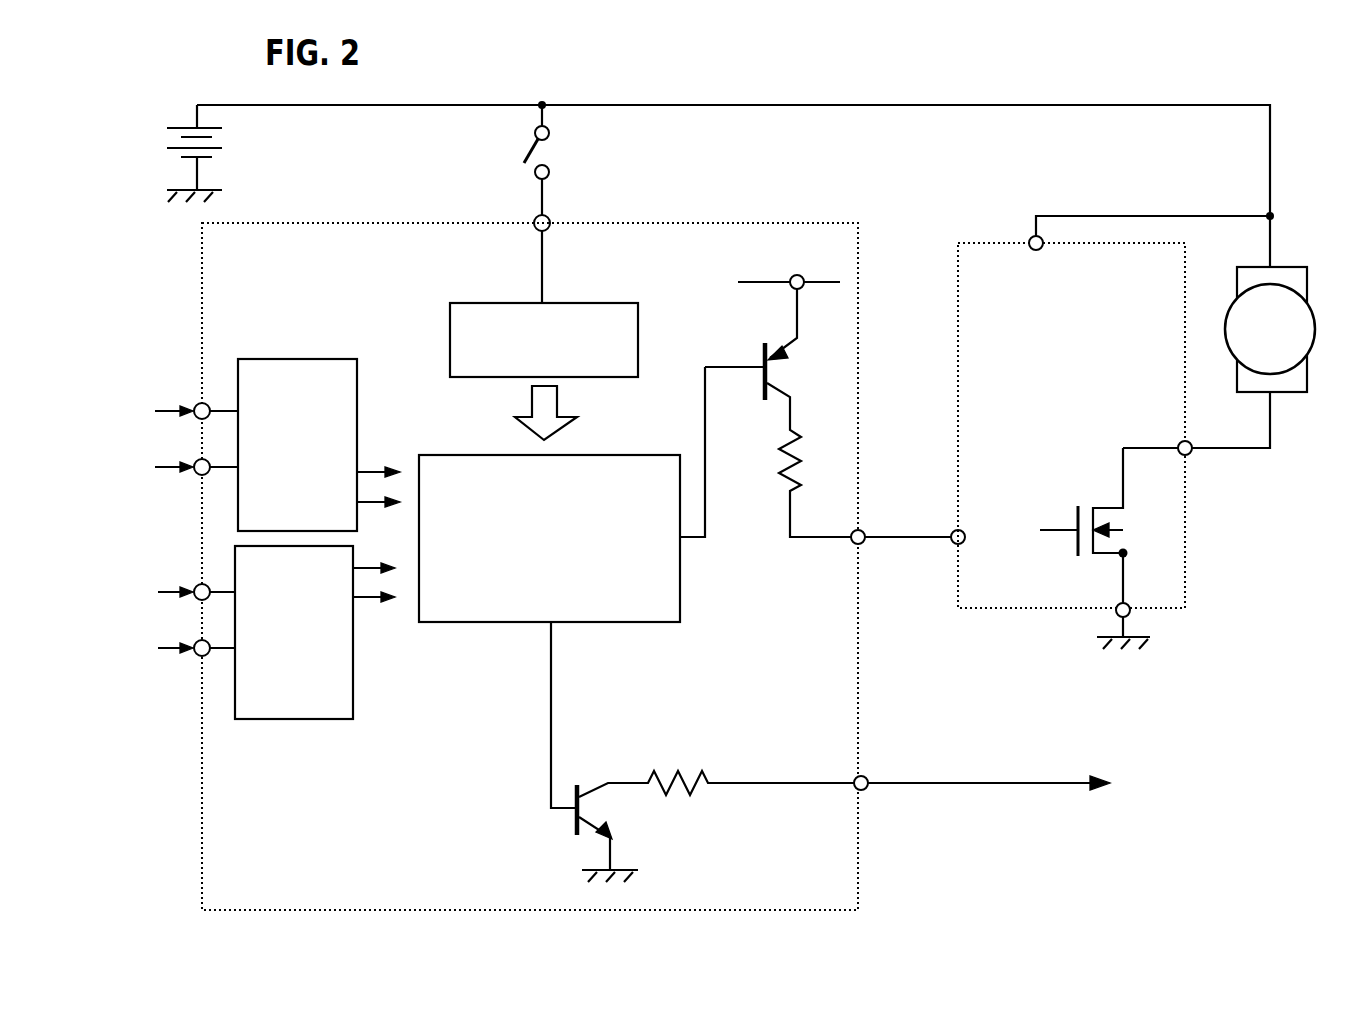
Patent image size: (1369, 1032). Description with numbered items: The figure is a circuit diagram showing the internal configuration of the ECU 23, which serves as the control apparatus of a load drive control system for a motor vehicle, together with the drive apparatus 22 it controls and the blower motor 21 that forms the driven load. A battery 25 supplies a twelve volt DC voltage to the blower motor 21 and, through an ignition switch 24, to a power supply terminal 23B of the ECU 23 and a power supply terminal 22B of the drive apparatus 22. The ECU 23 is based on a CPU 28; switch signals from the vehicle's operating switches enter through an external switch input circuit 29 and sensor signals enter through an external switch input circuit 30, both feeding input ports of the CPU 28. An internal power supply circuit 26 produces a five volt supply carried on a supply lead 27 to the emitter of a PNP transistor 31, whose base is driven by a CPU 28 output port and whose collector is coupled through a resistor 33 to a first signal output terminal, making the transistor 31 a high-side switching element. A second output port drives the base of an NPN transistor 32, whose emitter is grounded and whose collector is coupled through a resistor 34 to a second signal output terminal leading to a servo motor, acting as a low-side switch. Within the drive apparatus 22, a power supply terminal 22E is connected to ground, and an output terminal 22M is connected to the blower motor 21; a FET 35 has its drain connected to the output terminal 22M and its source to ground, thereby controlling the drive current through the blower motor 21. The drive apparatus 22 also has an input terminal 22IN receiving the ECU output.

The blower motor 21 is at (1306, 366).
The drive apparatus 22 is at (1183, 568).
The power supply terminal 22B is at (1022, 234).
The output terminal 22M is at (1195, 455).
The power supply terminal 22E is at (1135, 622).
The driver input terminal 22IN is at (950, 544).
The ECU 23 is at (790, 221).
The power supply terminal 23B is at (528, 217).
The ignition switch 24 is at (556, 148).
The battery 25 is at (233, 132).
The internal power supply circuit 26 is at (612, 300).
The supply lead 27 is at (823, 278).
The CPU 28 is at (480, 452).
The external switch input circuit 29 is at (305, 355).
The external switch input circuit 30 is at (266, 720).
The PNP transistor 31 is at (763, 397).
The NPN transistor 32 is at (563, 815).
The resistor 33 is at (798, 472).
The resistor 34 is at (677, 762).
The FET 35 is at (1103, 570).